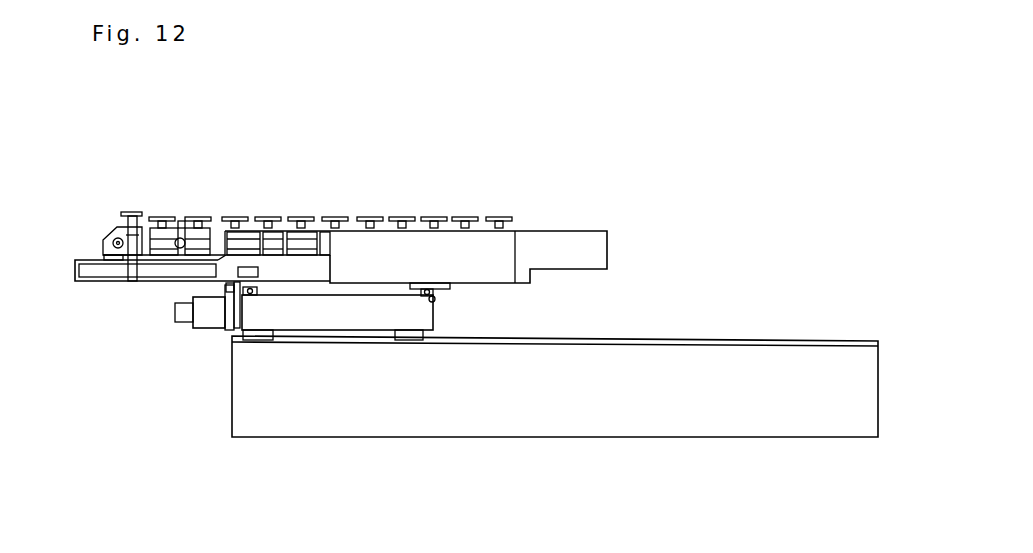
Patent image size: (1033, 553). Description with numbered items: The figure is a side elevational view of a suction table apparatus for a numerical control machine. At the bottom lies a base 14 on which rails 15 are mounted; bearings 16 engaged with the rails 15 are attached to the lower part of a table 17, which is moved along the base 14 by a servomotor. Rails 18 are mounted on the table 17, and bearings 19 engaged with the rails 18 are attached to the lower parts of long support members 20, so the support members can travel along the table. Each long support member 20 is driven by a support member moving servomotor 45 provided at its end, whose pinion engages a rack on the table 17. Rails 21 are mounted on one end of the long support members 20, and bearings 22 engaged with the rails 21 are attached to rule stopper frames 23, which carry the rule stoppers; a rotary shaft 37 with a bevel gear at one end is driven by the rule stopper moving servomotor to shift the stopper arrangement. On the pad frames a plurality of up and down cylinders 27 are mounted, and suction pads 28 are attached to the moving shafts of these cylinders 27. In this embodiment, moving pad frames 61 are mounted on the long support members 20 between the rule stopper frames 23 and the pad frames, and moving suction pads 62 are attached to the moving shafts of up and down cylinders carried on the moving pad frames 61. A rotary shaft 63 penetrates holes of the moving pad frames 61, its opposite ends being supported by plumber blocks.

The base 14 is at (593, 418).
The rails 15 is at (745, 340).
The bearings 16 is at (263, 331).
The table 17 is at (350, 316).
The rails 18 is at (234, 320).
The bearings 19 is at (249, 296).
The long support members 20 is at (578, 237).
The rails 21 is at (82, 258).
The bearings 22 is at (112, 261).
The rule stopper frames 23 is at (132, 211).
The up and down cylinders 27 is at (306, 238).
The suction pads 28 is at (468, 217).
The rotary shaft 37 is at (114, 239).
The support member moving servomotors 45 is at (203, 316).
The moving pad frames 61 is at (180, 249).
The moving suction pads 62 is at (193, 221).
The rotary shaft 63 is at (181, 238).